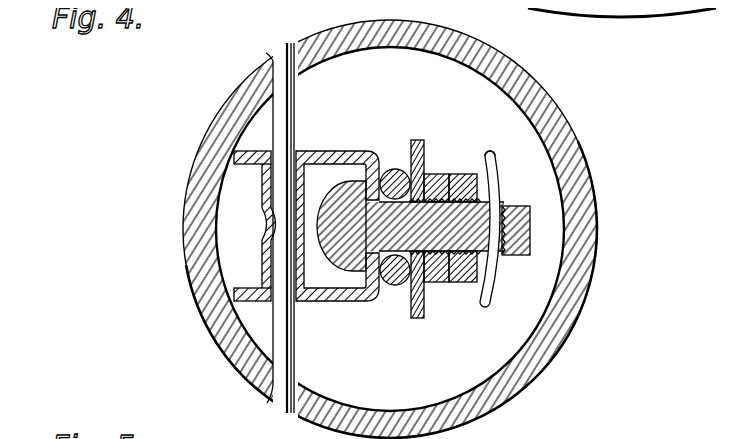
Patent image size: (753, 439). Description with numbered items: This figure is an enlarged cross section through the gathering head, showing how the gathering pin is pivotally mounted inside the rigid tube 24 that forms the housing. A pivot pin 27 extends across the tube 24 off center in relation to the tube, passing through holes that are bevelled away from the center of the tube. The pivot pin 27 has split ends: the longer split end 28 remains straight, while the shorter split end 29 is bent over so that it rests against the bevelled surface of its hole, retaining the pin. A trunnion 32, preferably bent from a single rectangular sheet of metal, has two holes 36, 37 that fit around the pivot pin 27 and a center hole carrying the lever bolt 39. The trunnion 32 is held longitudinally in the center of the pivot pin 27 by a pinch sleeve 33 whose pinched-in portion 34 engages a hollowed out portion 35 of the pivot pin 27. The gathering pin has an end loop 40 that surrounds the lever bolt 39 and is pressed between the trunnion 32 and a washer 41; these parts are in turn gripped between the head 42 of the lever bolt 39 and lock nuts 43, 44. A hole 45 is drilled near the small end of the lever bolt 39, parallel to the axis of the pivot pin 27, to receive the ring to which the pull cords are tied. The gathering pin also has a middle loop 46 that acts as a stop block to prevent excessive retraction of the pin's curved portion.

The rigid tube 24 is at (197, 248).
The pivot pin 27 is at (272, 328).
The longer split end 28 is at (279, 405).
The shorter split end 29 is at (267, 385).
The trunnion 32 is at (337, 300).
The pinch sleeve 33 is at (258, 179).
The pinched-in portion 34 is at (263, 218).
The hollowed out portion 35 is at (277, 241).
The hole 36 is at (260, 149).
The hole 37 is at (272, 331).
The lever bolt 39 is at (435, 281).
The end loop 40 is at (403, 136).
The washer 41 is at (426, 171).
The head 42 is at (345, 182).
The lock nut 43 is at (440, 171).
The lock nut 44 is at (487, 153).
The hole 45 is at (500, 202).
The middle loop 46 is at (492, 161).